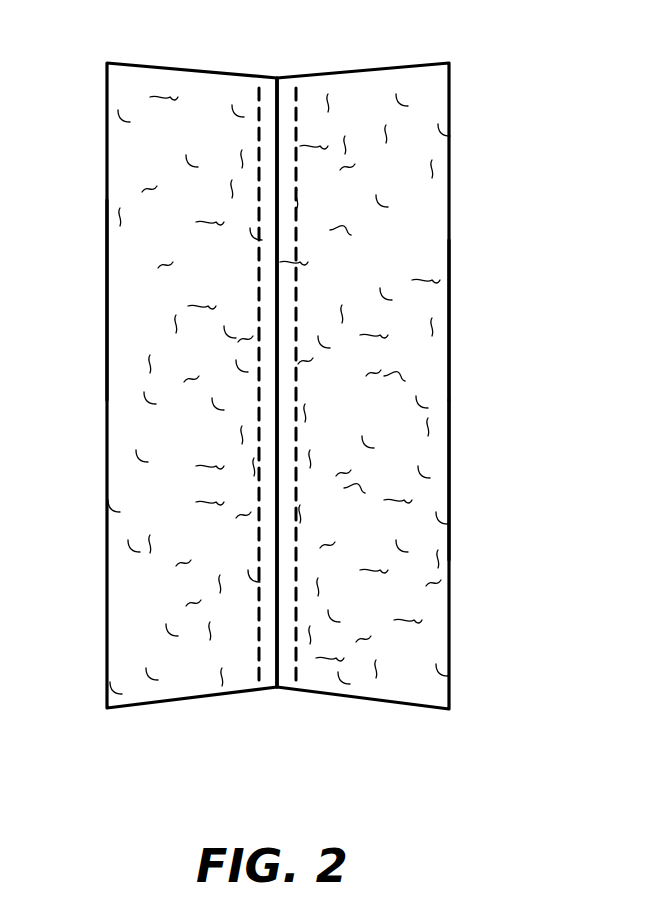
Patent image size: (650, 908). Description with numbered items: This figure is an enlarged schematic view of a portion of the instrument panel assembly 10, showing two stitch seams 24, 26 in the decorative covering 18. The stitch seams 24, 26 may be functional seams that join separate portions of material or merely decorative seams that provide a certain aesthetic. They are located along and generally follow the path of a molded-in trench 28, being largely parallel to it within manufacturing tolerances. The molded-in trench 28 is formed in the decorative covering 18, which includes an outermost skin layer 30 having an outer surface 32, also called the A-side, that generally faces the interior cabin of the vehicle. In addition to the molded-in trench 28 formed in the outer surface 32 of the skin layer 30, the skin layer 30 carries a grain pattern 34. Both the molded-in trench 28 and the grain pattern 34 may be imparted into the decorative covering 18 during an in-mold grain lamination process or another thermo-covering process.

The instrument panel assembly 10 is at (133, 78).
The decorative covering 18 is at (430, 130).
The stitch seam 24 is at (262, 92).
The stitch seam 26 is at (298, 112).
The molded-in trench 28 is at (276, 687).
The skin layer 30 is at (427, 323).
The outer surface 32 is at (432, 431).
The grain pattern 34 is at (130, 280).